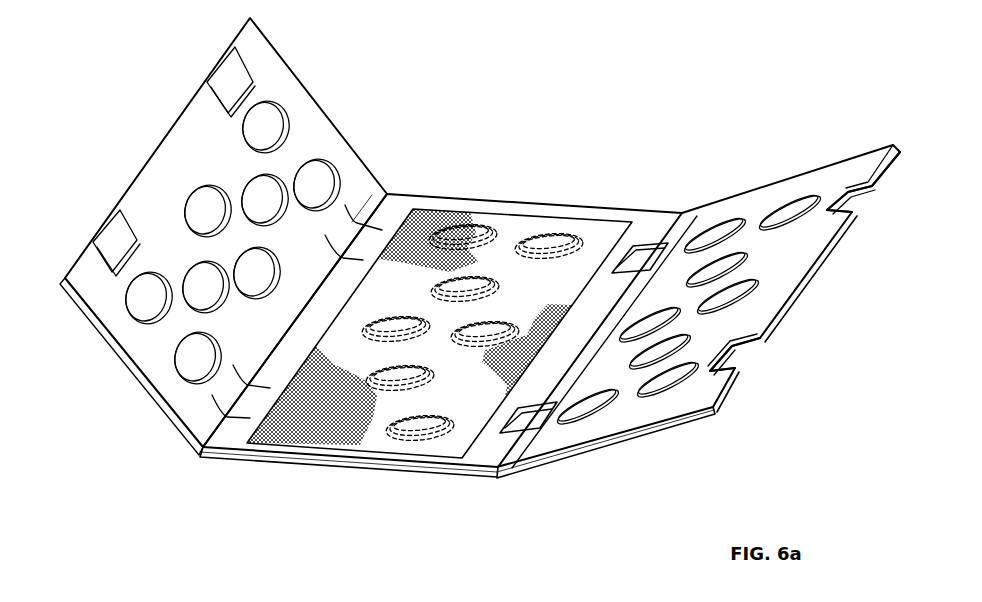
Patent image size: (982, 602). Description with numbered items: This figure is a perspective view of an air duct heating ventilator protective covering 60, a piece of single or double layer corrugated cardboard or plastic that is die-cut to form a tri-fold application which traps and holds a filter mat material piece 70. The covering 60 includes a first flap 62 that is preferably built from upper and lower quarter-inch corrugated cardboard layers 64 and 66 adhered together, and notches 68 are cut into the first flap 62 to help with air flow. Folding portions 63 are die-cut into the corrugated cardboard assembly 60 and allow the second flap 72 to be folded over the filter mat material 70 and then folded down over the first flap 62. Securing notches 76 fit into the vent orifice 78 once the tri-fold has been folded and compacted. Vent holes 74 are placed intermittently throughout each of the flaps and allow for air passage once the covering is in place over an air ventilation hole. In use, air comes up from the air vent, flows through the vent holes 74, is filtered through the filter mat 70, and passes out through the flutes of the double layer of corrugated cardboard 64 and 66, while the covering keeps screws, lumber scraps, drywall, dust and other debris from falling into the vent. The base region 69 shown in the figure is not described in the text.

The air duct heating ventilator protective covering 60 is at (180, 444).
The first flap 62 is at (578, 437).
The folding portions 63 is at (347, 225).
The upper corrugated cardboard layer 64 is at (660, 430).
The lower corrugated cardboard layer 66 is at (700, 413).
The notches 68 is at (860, 183).
The base panel 69 is at (483, 458).
The filter mat material piece 70 is at (513, 228).
The second flap 72 is at (160, 165).
The vent holes 74 is at (133, 311).
The securing notches 76 is at (227, 82).
The vent orifice 78 is at (637, 250).